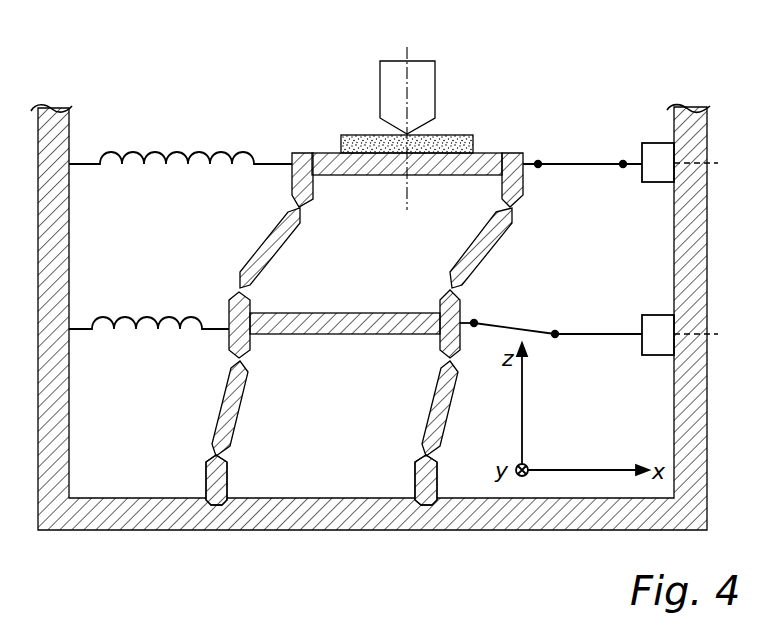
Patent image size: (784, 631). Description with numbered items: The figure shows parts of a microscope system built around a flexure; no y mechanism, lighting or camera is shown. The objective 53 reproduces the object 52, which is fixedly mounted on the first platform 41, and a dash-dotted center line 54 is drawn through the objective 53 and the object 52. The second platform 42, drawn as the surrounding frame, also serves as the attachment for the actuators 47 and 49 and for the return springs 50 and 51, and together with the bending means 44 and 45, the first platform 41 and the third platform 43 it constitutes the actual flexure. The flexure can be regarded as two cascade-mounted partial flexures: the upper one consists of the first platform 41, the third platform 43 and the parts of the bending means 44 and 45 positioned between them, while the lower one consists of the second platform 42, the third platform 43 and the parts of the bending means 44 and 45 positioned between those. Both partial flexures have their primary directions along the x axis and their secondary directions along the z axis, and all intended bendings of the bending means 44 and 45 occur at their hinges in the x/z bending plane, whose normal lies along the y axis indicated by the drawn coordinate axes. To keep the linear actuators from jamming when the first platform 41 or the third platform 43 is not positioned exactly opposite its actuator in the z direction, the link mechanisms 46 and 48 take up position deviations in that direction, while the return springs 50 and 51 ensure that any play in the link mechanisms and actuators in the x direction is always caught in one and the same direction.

The first platform 41 is at (356, 176).
The second platform 42 is at (322, 497).
The third platform 43 is at (358, 312).
The bending means 44 is at (264, 245).
The bending means 45 is at (497, 248).
The link mechanism 46 is at (578, 160).
The actuator 47 is at (656, 143).
The link mechanism 48 is at (520, 330).
The actuator 49 is at (656, 315).
The return spring 50 is at (153, 148).
The return spring 51 is at (147, 318).
The object 52 is at (460, 135).
The objective 53 is at (435, 72).
The center axis 54 is at (405, 46).